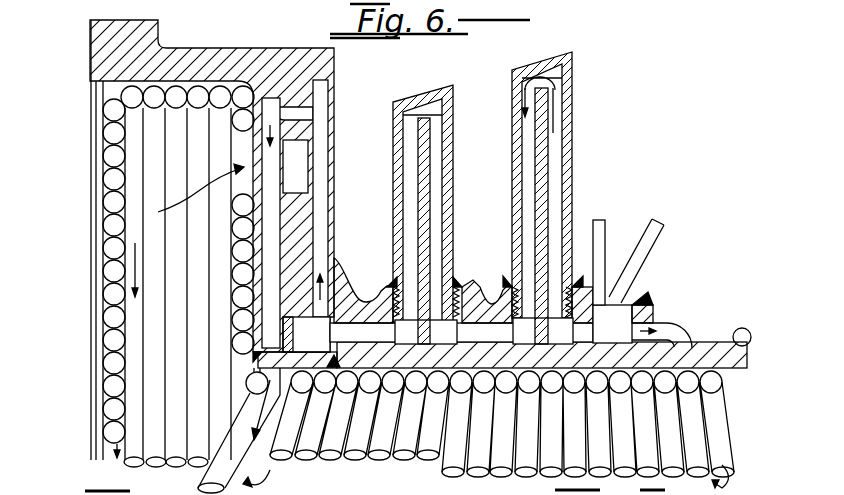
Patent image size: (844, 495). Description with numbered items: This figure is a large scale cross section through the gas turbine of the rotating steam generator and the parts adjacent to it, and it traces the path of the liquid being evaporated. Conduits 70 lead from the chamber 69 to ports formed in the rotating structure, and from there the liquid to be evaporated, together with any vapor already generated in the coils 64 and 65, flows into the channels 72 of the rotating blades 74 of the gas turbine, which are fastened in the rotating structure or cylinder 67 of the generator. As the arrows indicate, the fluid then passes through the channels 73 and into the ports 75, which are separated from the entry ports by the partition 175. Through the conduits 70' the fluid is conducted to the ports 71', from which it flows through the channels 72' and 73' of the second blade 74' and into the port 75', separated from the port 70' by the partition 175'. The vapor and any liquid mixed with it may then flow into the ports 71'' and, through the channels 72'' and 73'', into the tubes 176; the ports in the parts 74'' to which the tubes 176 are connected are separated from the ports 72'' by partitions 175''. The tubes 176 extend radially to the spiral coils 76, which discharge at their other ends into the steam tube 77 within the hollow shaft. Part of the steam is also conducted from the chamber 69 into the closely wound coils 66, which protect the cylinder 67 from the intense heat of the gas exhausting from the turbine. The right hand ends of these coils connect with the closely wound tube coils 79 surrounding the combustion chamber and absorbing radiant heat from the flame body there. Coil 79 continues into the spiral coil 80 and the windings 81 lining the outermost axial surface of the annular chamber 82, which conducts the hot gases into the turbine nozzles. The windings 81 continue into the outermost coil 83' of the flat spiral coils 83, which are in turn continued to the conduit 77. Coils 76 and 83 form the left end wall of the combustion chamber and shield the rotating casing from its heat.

The coils 64 is at (667, 230).
The coils 65 is at (600, 217).
The closely wound coils 66 is at (694, 345).
The rotating structure or cylinder 67 is at (697, 343).
The chamber 69 is at (636, 292).
The conduits 70 is at (619, 286).
The conduits 70' is at (497, 288).
The ports 71' is at (411, 290).
The ports 71'' is at (306, 334).
The channels 72 is at (564, 185).
The channels 72' is at (442, 203).
The channels 72'' is at (349, 198).
The channels 73 is at (526, 216).
The channels 73' is at (396, 231).
The channels 73'' is at (322, 223).
The rotating blades 74 is at (569, 105).
The second blade 74' is at (452, 106).
The parts 74'' is at (236, 186).
The ports 75 is at (533, 292).
The port 75' is at (482, 278).
The spiral coils 76 is at (274, 482).
The steam tube 77 is at (74, 462).
The closely wound tube coils 79 is at (712, 382).
The spiral coil 80 is at (246, 343).
The windings 81 is at (176, 108).
The annular chamber 82 is at (177, 287).
The flat spiral coils 83 is at (91, 240).
The outermost coil 83' is at (119, 225).
The partition 175 is at (625, 255).
The partition 175' is at (500, 407).
The partitions 175'' is at (364, 290).
The tubes 176 is at (205, 478).